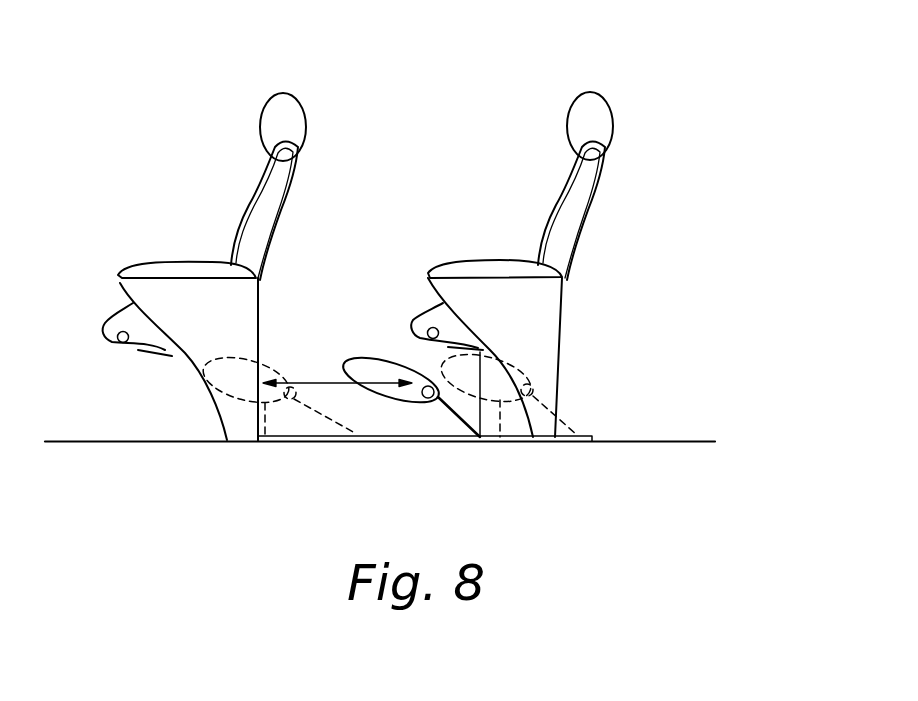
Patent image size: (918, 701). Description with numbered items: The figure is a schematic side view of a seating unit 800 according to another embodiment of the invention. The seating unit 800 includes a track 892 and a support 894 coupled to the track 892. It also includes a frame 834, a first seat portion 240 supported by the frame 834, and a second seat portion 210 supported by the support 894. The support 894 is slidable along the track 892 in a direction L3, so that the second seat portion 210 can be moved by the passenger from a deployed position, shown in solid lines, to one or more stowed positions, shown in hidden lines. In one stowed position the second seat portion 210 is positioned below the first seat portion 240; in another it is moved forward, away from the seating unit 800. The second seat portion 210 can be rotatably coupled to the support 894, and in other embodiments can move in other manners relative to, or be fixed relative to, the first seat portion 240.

The seating unit 800 is at (618, 82).
The first seat portion 240 is at (417, 312).
The second seat portion 210 is at (382, 443).
The track 892 is at (358, 440).
The support 894 is at (447, 443).
The frame 834 is at (475, 443).
The direction L3 is at (368, 382).